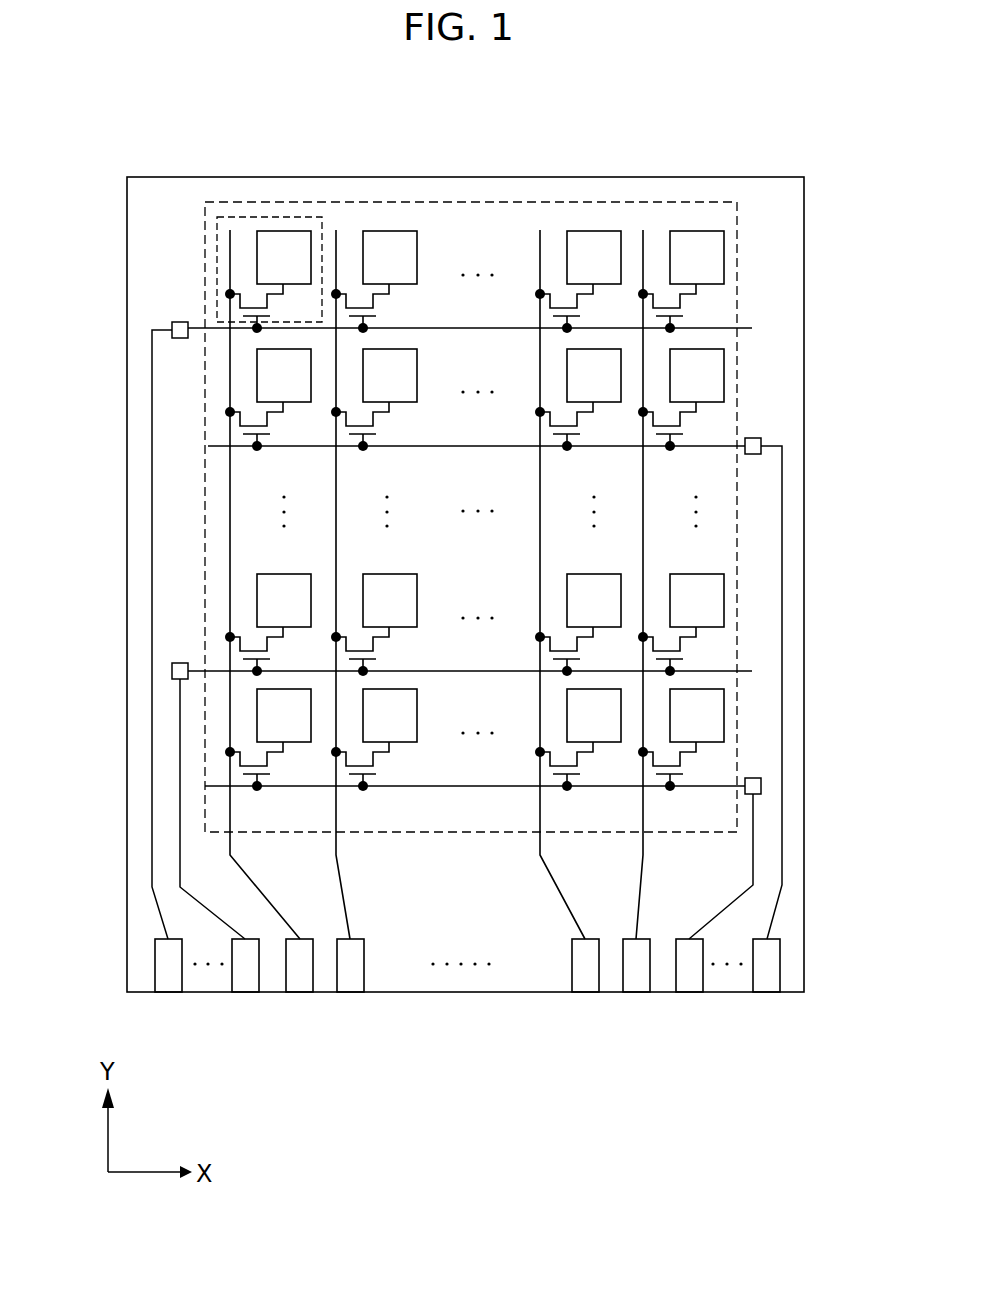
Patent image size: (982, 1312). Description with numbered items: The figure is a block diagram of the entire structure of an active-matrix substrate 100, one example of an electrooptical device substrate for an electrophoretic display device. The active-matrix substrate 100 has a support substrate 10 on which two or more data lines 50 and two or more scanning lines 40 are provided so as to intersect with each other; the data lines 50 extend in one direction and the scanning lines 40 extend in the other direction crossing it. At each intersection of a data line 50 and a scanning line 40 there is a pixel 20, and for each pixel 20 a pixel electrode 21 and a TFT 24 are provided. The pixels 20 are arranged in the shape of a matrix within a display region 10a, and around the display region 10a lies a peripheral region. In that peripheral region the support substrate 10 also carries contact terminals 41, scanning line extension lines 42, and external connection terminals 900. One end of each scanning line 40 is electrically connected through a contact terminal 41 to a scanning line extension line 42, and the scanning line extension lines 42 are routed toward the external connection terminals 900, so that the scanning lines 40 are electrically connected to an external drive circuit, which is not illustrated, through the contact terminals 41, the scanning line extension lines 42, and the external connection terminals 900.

The active-matrix substrate 100 is at (152, 98).
The support substrate 10 is at (457, 177).
The display region 10a is at (587, 202).
The pixel 20 is at (263, 215).
The pixel electrode 21 is at (295, 243).
The TFT 24 is at (260, 308).
The scanning line 40 is at (415, 328).
The contact terminal 41 is at (175, 325).
The scanning line extension line 42 is at (783, 605).
The data line 50 is at (230, 532).
The external connection terminal 900 is at (167, 973).